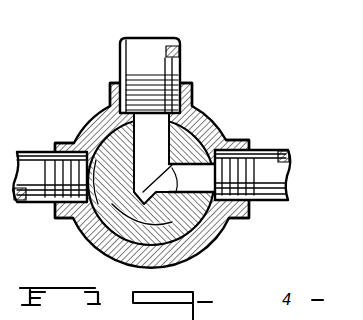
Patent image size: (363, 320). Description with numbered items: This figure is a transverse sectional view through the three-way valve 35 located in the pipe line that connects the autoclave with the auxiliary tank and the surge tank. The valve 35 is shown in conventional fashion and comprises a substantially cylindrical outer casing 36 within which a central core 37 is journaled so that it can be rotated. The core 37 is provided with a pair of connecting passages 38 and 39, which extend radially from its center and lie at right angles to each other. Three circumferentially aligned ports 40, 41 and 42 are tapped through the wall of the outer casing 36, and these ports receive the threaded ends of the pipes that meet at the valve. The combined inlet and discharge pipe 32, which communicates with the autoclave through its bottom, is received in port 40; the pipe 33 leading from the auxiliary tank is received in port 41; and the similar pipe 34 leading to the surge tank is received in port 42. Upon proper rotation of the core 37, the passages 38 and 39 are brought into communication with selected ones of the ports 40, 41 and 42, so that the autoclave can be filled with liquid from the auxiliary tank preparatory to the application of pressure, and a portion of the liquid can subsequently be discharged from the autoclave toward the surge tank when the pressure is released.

The combined inlet and discharge pipe 32 is at (141, 52).
The pipe 33 is at (262, 201).
The pipe 34 is at (38, 150).
The three-way valve 35 is at (150, 157).
The outer casing 36 is at (208, 110).
The central core 37 is at (86, 118).
The connecting passage 38 is at (174, 158).
The connecting passage 39 is at (180, 172).
The port 40 is at (108, 95).
The port 41 is at (244, 141).
The port 42 is at (70, 219).